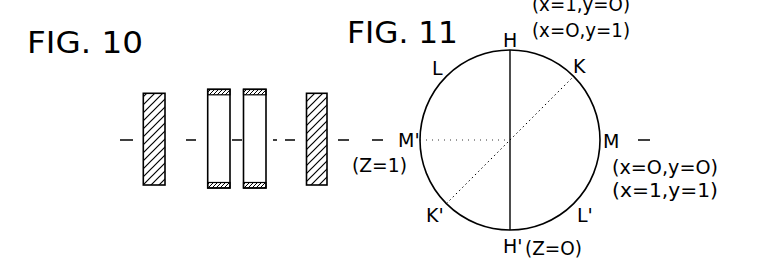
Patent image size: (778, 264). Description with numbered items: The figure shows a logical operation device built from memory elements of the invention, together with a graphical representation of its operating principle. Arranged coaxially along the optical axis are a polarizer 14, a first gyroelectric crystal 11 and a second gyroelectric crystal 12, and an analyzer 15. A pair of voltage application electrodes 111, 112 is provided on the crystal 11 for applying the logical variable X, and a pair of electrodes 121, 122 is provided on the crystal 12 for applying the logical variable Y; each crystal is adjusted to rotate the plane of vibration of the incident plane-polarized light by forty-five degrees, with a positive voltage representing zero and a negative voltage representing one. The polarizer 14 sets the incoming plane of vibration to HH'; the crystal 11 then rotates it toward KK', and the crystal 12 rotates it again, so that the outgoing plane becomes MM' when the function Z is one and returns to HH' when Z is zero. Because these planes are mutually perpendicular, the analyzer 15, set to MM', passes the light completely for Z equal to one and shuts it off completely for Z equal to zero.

The polarizer 14 is at (151, 127).
The gyroelectric crystal 11 is at (208, 100).
The voltage application electrode 111 is at (219, 82).
The voltage application electrode 112 is at (210, 200).
The gyroelectric crystal 12 is at (264, 109).
The voltage application electrode 121 is at (254, 82).
The voltage application electrode 122 is at (254, 200).
The analyzer 15 is at (318, 94).